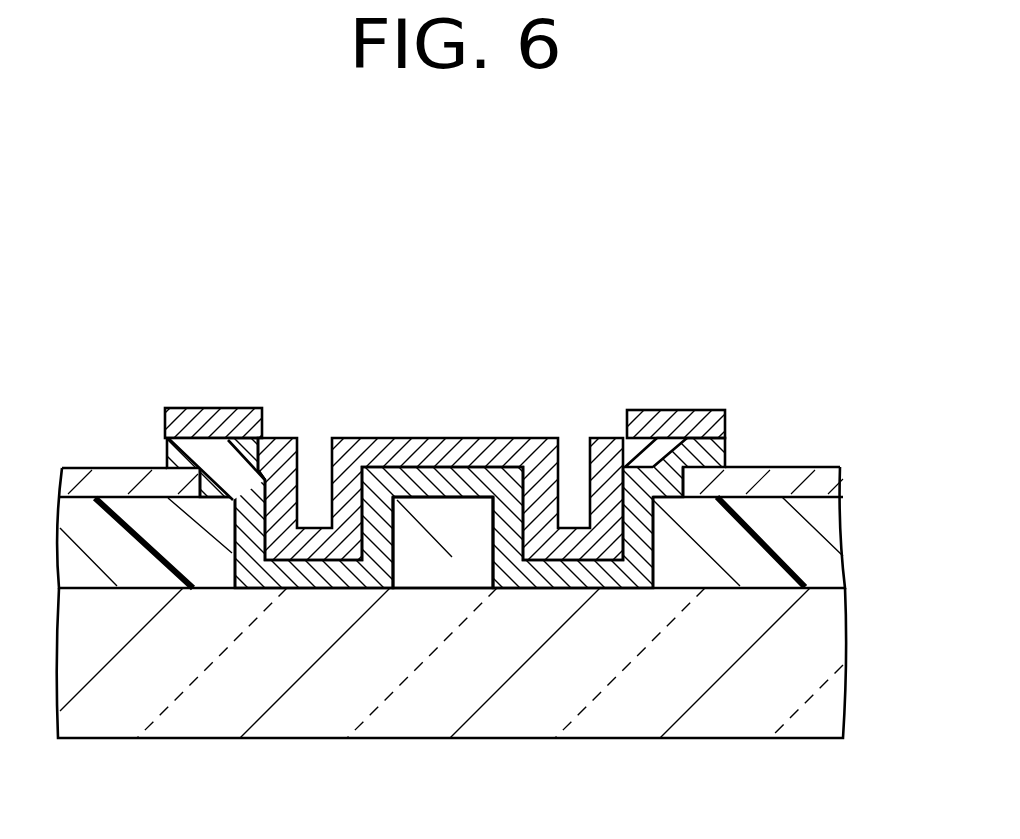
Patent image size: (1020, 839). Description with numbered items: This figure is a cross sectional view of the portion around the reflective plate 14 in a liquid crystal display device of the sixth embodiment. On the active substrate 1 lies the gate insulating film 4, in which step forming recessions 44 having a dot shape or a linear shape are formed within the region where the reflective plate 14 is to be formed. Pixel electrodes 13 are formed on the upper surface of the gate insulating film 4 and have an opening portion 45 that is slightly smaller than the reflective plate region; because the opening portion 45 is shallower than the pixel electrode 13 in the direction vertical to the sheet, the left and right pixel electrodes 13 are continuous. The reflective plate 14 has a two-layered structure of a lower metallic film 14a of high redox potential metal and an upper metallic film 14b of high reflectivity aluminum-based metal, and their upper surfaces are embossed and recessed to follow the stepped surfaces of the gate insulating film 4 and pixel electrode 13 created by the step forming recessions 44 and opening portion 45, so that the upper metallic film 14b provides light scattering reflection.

The active substrate 1 is at (823, 650).
The gate insulating film 4 is at (827, 543).
The pixel electrode 13 is at (78, 478).
The reflective plate 14 is at (445, 411).
The lower metallic film 14a is at (379, 482).
The upper metallic film 14b is at (345, 310).
The step forming recessions 44 is at (238, 546).
The opening portion 45 is at (202, 480).